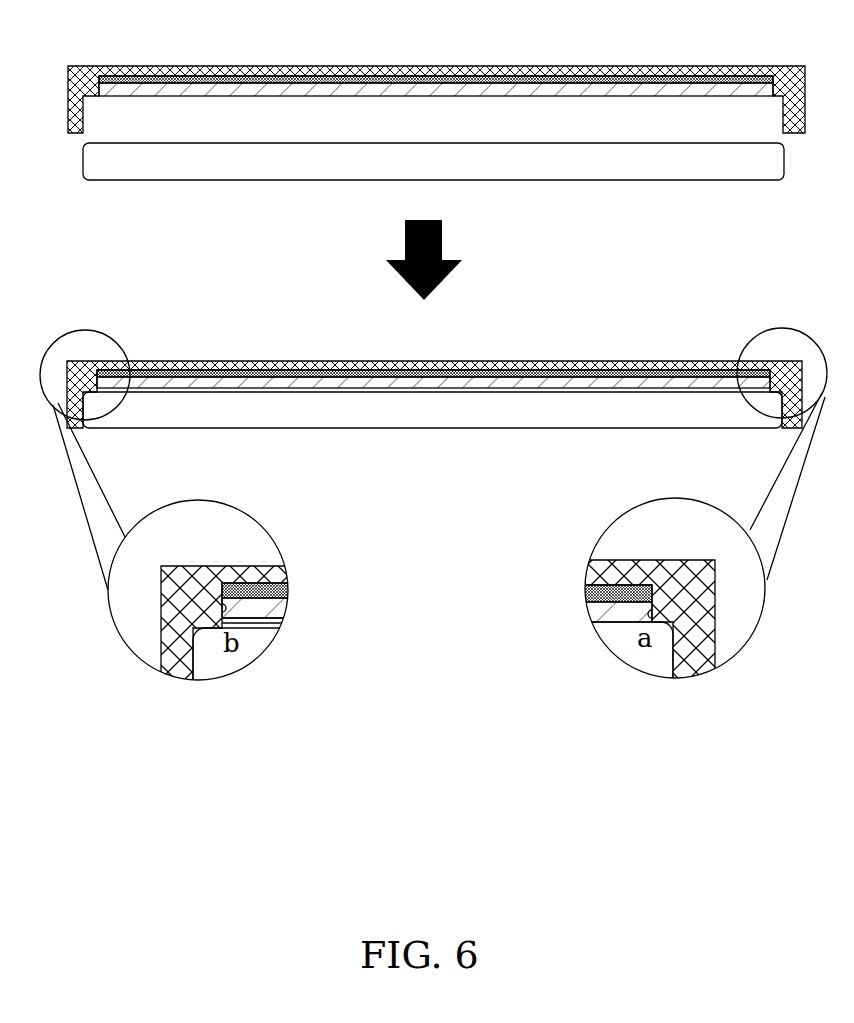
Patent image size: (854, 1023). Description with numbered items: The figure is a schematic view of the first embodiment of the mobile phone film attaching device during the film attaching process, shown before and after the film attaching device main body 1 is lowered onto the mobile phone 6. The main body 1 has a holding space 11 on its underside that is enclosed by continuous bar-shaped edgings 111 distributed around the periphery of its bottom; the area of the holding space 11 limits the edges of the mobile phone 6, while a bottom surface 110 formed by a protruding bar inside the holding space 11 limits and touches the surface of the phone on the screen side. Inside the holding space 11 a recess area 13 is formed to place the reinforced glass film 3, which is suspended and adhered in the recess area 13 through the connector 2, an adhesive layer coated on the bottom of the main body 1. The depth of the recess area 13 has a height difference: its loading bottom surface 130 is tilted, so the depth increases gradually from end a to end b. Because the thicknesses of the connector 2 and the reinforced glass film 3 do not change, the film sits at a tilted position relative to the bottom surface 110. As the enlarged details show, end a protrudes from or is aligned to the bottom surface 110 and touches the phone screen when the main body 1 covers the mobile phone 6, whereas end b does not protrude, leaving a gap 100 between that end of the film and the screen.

The film attaching device main body 1 is at (68, 72).
The connector 2 is at (171, 77).
The reinforced glass film 3 is at (235, 90).
The mobile phone 6 is at (172, 165).
The holding space 11 is at (316, 108).
The recess area 13 is at (223, 608).
The gap 100 is at (252, 623).
The bottom surface 110 is at (92, 96).
The edgings 111 is at (68, 108).
The loading bottom surface 130 is at (254, 570).